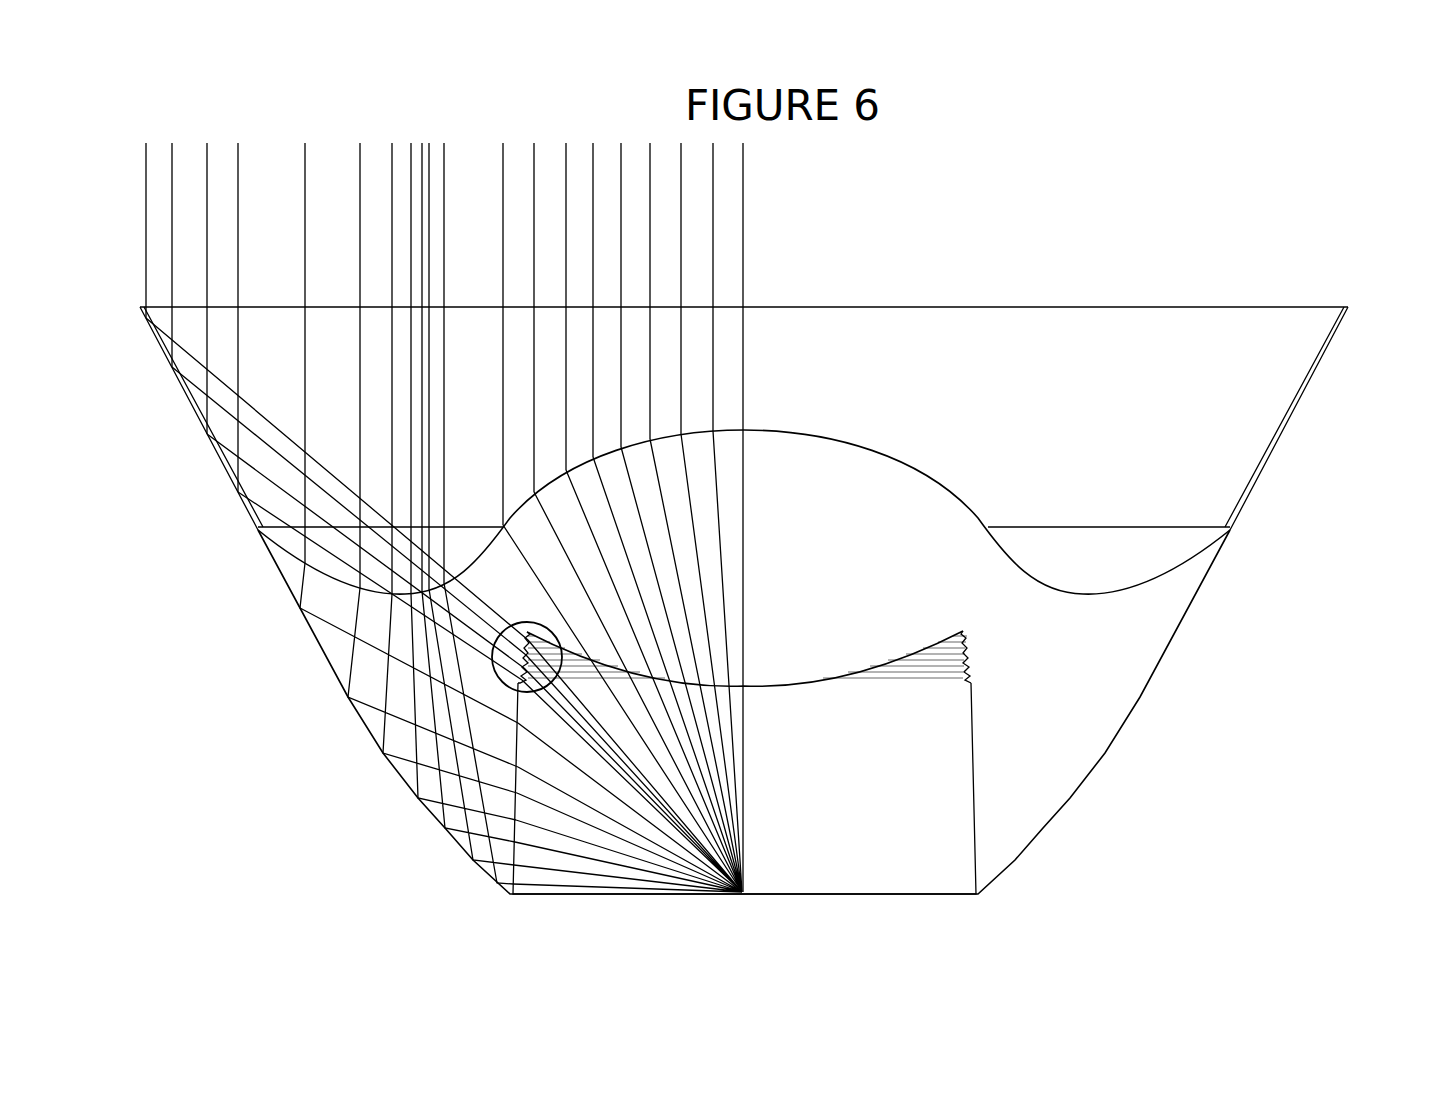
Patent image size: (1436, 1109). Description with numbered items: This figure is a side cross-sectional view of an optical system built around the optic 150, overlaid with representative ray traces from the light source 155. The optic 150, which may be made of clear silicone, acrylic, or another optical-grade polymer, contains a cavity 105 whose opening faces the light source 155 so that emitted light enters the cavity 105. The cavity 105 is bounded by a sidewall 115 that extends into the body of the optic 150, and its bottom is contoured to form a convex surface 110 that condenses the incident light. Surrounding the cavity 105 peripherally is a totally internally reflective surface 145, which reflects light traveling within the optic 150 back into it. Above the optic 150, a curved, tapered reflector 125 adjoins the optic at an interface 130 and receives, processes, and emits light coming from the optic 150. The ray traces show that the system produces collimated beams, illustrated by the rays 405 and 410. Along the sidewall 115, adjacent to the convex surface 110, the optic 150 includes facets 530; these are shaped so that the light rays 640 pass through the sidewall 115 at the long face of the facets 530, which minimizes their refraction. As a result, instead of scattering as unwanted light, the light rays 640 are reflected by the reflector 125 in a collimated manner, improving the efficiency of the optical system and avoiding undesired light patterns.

The cavity 105 is at (866, 864).
The convex surface 110 is at (828, 683).
The sidewall 115 is at (972, 723).
The reflector 125 is at (1332, 358).
The interface 130 is at (1233, 529).
The totally internally reflective surface 145 is at (1170, 652).
The optic 150 is at (1282, 765).
The light source 155 is at (758, 897).
The rays 405 is at (717, 192).
The rays 410 is at (355, 190).
The facets 530 is at (503, 630).
The light rays 640 is at (171, 156).